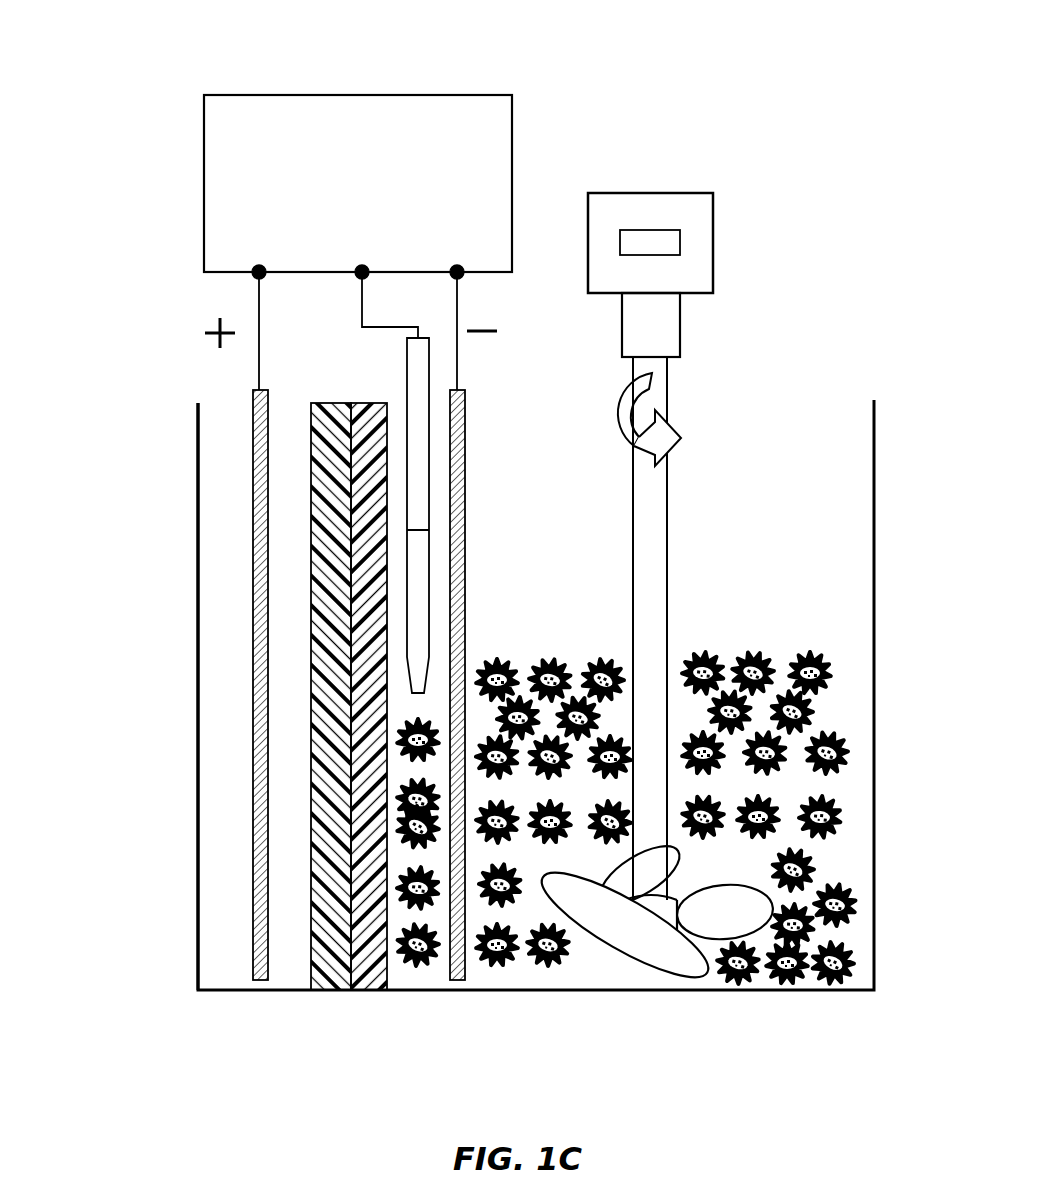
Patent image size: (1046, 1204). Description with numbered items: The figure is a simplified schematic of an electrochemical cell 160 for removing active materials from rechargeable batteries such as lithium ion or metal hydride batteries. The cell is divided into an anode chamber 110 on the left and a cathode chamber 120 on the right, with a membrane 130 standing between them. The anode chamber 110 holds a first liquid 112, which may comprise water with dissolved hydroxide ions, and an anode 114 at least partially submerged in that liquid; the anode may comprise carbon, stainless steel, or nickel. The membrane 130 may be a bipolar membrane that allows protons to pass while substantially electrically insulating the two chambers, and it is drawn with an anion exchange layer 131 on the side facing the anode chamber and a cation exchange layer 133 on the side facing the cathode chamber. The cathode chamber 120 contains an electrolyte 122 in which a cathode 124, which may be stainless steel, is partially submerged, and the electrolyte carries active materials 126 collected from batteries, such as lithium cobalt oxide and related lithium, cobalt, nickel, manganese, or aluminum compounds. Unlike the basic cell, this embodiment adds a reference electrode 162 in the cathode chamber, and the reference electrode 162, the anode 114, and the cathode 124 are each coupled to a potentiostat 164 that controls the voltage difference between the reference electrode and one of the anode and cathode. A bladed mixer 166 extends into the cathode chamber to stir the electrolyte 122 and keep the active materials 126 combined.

The electrochemical cell 160 is at (154, 126).
The potentiostat 164 is at (373, 194).
The reference electrode 162 is at (425, 372).
The cathode 124 is at (455, 500).
The anode 114 is at (255, 767).
The first liquid 112 is at (225, 891).
The membrane 130 is at (249, 734).
The anion exchange layer 131 is at (335, 447).
The cation exchange layer 133 is at (350, 511).
The anode chamber 110 is at (300, 1015).
The cathode chamber 120 is at (874, 1015).
The electrolyte 122 is at (786, 796).
The active materials 126 is at (852, 903).
The mixer 166 is at (660, 490).